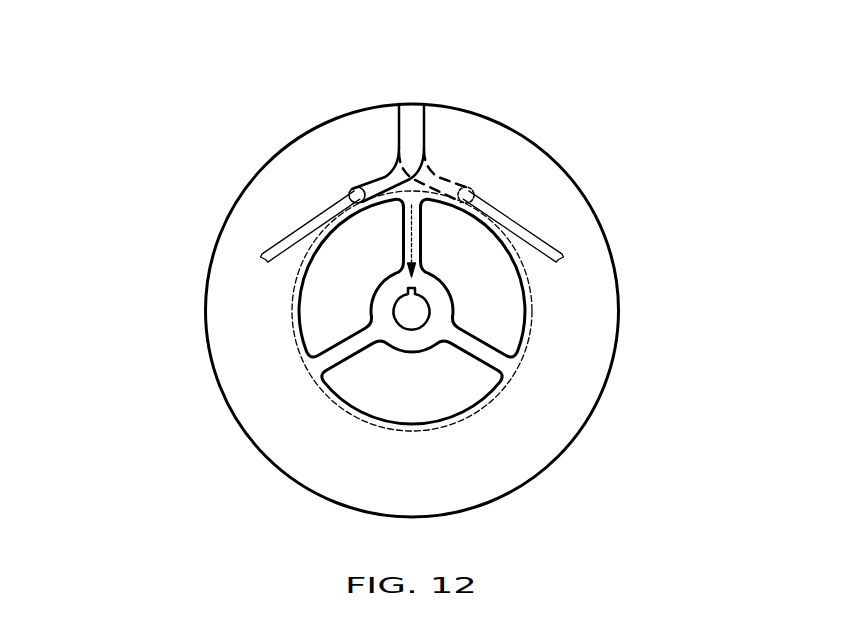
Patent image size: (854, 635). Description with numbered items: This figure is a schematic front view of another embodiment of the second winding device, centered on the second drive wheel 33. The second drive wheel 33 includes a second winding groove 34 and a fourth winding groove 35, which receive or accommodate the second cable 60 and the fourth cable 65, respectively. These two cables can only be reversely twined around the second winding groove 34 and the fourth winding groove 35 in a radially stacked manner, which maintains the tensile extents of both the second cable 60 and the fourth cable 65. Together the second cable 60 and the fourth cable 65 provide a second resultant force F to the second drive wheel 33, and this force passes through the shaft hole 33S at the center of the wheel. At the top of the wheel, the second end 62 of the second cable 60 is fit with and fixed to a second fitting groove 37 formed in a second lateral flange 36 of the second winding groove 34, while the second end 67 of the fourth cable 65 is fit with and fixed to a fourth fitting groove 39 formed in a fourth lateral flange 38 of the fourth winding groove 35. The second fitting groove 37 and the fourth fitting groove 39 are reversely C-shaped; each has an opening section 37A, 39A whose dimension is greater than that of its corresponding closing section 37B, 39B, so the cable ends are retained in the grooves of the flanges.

The second drive wheel 33 is at (605, 182).
The second winding groove 34 is at (521, 311).
The fourth winding groove 35 is at (605, 305).
The second lateral flange 36 is at (323, 303).
The fourth lateral flange 38 is at (230, 213).
The shaft hole 33S is at (413, 323).
The opening section 37A is at (408, 105).
The opening section 39A is at (410, 103).
The second fitting groove 37 is at (385, 173).
The fourth fitting groove 39 is at (433, 170).
The closing section 37B is at (363, 203).
The closing section 39B is at (468, 205).
The second end of the second cable 62 is at (354, 188).
The second end of the fourth cable 67 is at (474, 190).
The second cable 60 is at (305, 223).
The fourth cable 65 is at (522, 223).
The second resultant force F is at (407, 252).